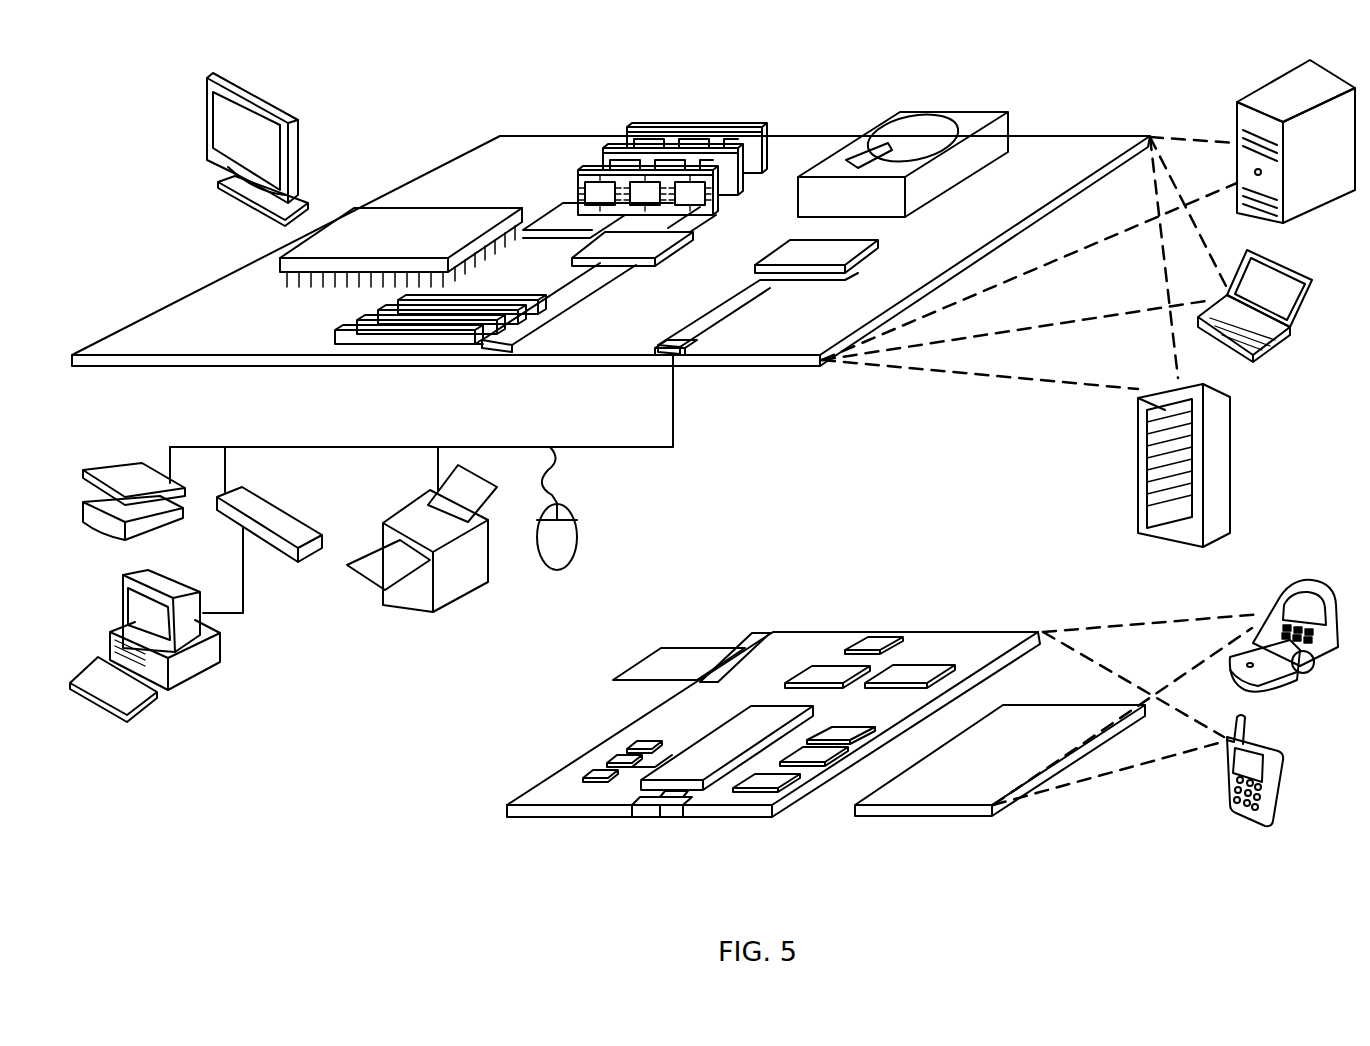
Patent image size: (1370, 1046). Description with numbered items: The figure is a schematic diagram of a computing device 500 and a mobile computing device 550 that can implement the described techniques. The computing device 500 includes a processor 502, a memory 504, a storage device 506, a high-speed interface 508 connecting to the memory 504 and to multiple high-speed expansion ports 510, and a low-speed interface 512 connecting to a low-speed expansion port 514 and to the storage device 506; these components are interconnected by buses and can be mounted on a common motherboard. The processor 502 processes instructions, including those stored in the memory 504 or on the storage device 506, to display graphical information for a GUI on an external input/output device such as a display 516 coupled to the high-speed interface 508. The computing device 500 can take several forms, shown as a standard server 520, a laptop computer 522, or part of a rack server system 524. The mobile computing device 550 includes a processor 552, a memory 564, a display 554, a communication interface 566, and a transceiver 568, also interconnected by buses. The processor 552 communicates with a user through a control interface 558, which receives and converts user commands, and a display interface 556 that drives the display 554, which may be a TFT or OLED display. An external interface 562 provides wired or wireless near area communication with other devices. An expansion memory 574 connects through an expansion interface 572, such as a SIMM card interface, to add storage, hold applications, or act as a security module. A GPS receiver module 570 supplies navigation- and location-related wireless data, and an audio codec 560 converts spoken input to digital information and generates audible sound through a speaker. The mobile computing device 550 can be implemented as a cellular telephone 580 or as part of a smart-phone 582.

The computing device 500 is at (426, 95).
The processor 502 is at (292, 263).
The memory 504 is at (637, 126).
The storage device 506 is at (902, 110).
The high-speed interface 508 is at (600, 245).
The high-speed expansion ports 510 is at (357, 323).
The low-speed interface 512 is at (795, 252).
The low-speed expansion port 514 is at (685, 356).
The display 516 is at (213, 75).
The standard server 520 is at (1237, 118).
The laptop computer 522 is at (1311, 280).
The rack server system 524 is at (1138, 494).
The mobile computing device 550 is at (480, 822).
The processor 552 is at (698, 772).
The display 554 is at (952, 792).
The display interface 556 is at (768, 793).
The control interface 558 is at (830, 765).
The audio codec 560 is at (840, 735).
The external interface 562 is at (658, 808).
The memory 564 is at (610, 762).
The communication interface 566 is at (822, 672).
The transceiver 568 is at (910, 672).
The GPS receiver module 570 is at (878, 636).
The expansion interface 572 is at (750, 647).
The expansion memory 574 is at (670, 660).
The cellular telephone 580 is at (1290, 590).
The smart-phone 582 is at (1225, 773).